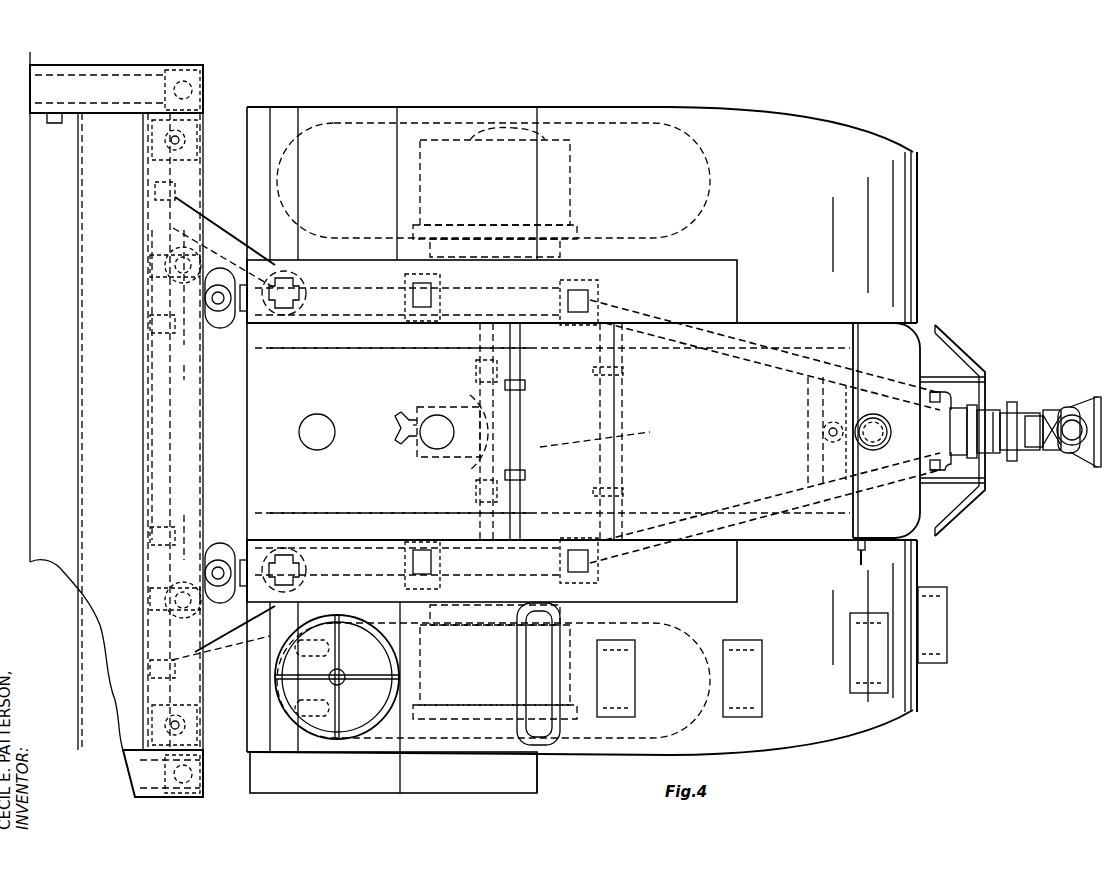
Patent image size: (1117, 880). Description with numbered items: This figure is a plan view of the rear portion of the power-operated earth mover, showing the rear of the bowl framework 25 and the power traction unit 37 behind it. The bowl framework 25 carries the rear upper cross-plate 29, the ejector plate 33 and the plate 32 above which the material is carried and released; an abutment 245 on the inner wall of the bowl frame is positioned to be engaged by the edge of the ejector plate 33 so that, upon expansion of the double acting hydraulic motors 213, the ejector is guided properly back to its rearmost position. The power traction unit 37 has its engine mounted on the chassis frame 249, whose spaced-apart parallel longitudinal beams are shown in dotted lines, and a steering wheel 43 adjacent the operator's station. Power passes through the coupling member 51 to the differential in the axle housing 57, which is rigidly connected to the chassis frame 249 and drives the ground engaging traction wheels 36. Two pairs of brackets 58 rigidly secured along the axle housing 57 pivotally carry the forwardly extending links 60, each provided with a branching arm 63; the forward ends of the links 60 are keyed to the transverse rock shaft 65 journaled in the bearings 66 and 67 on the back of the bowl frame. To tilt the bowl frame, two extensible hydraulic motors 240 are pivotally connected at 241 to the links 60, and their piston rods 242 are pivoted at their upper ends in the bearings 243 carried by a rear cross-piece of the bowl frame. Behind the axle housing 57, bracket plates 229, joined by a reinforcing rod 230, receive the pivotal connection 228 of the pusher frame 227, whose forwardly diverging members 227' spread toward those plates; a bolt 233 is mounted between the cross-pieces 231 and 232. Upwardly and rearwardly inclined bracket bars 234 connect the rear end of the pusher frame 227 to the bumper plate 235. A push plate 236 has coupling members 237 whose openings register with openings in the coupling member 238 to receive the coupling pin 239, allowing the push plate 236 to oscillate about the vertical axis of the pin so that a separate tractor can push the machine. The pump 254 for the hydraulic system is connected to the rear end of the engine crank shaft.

The framework 25 is at (60, 62).
The abutment 245 is at (55, 124).
The plate 32 is at (76, 401).
The ejector plate 33 is at (112, 431).
The rear upper cross-plate 29 is at (187, 452).
The transverse shaft 65 is at (155, 418).
The bearings 66 is at (150, 325).
The bearings 67 is at (155, 192).
The cylinders 213 is at (165, 265).
The bearings 243 is at (186, 395).
The piston rod 242 is at (216, 312).
The extensible hydraulic motors 240 is at (246, 324).
The pivotal connection 241 is at (281, 312).
The branching arm 63 is at (222, 240).
The power traction unit 37 is at (618, 100).
The ground engaging traction wheels 36 is at (700, 135).
The links 60 is at (333, 324).
The brackets 58 is at (408, 284).
The axle housing 57 is at (465, 358).
The coupling member 51 is at (400, 420).
The reinforcing rod 230 is at (552, 430).
The chassis frame 249 is at (648, 352).
The bracket plates 229 is at (590, 300).
The pivotal connection 228 is at (592, 314).
The brace 227' is at (765, 431).
The cross-piece 231 is at (806, 393).
The bolt 233 is at (824, 436).
The cross-piece 232 is at (868, 412).
The bumper plate 235 is at (985, 362).
The bracket bars 234 is at (955, 385).
The pump 254 is at (942, 428).
The pusher frame 227 is at (1034, 453).
The coupling member 238 is at (1068, 412).
The coupling pin 239 is at (1071, 438).
The push plate 236 is at (1095, 400).
The coupling members 237 is at (1092, 470).
The steering wheel 43 is at (375, 725).